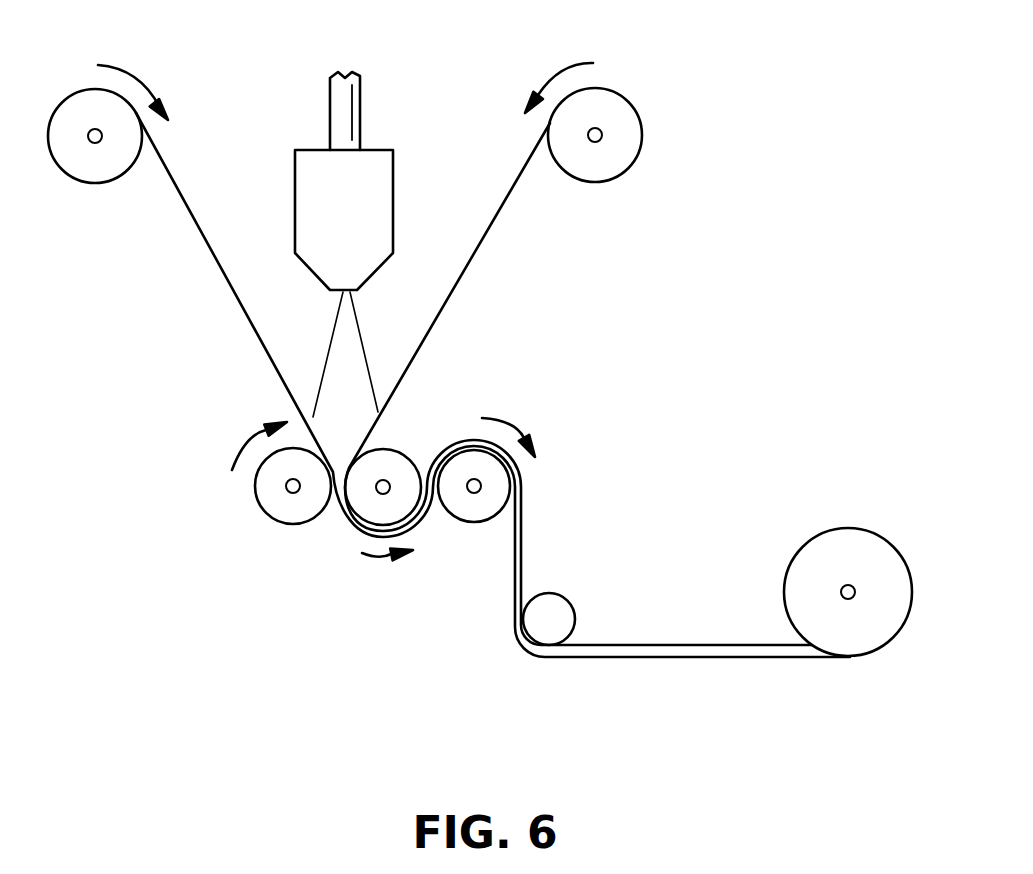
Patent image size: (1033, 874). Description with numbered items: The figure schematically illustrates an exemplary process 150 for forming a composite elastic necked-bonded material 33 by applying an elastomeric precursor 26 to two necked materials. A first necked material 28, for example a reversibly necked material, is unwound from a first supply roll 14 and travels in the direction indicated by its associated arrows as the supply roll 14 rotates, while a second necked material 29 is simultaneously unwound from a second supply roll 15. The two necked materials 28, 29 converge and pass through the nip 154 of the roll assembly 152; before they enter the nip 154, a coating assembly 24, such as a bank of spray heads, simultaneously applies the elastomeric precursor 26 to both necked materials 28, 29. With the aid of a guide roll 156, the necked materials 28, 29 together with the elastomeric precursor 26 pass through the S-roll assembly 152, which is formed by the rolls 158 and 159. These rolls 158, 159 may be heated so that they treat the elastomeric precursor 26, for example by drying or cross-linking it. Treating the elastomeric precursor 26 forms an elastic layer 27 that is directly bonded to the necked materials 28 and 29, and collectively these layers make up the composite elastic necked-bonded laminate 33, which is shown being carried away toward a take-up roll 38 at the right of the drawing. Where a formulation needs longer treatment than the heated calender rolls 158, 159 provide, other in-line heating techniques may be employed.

The first supply roll 14 is at (74, 93).
The second supply roll 15 is at (615, 92).
The coating assembly 24 is at (393, 168).
The elastomeric precursor 26 is at (362, 346).
The elastic layer 27 is at (598, 652).
The first necked material 28 is at (197, 230).
The second necked material 29 is at (494, 227).
The composite elastic necked-bonded laminate 33 is at (687, 602).
The take-up roll 38 is at (848, 528).
The process for forming a composite elastic necked-bonded material 150 is at (636, 302).
The S-roll assembly 152 is at (301, 569).
The nip 154 is at (427, 398).
The guide roll 156 is at (262, 510).
The heated roll 158 is at (408, 448).
The heated roll 159 is at (485, 524).